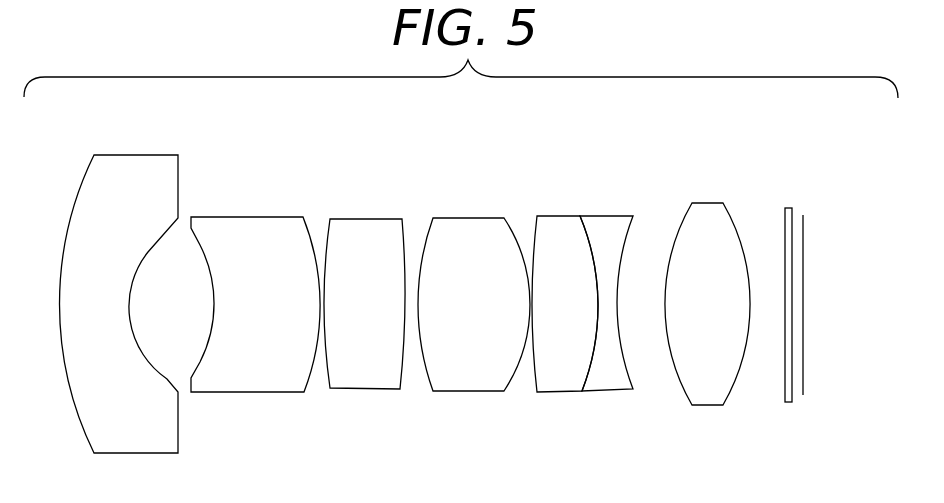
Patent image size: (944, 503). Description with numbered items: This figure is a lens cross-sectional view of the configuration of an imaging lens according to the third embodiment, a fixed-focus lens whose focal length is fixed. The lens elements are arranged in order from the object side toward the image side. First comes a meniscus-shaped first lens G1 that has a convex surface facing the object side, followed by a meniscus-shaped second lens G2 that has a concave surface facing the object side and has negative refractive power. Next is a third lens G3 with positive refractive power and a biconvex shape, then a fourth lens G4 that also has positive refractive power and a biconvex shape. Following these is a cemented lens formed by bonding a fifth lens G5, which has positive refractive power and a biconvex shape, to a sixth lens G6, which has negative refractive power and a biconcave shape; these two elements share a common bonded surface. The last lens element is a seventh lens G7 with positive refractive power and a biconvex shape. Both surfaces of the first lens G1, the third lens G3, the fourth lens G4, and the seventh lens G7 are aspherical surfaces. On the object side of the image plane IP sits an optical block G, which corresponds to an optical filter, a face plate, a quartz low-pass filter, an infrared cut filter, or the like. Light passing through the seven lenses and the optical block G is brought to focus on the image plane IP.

The first lens G1 is at (130, 167).
The second lens G2 is at (250, 220).
The third lens G3 is at (368, 223).
The fourth lens G4 is at (472, 221).
The fifth lens G5 is at (558, 219).
The sixth lens G6 is at (606, 223).
The seventh lens G7 is at (705, 207).
The optical block G is at (786, 206).
The image plane IP is at (803, 215).